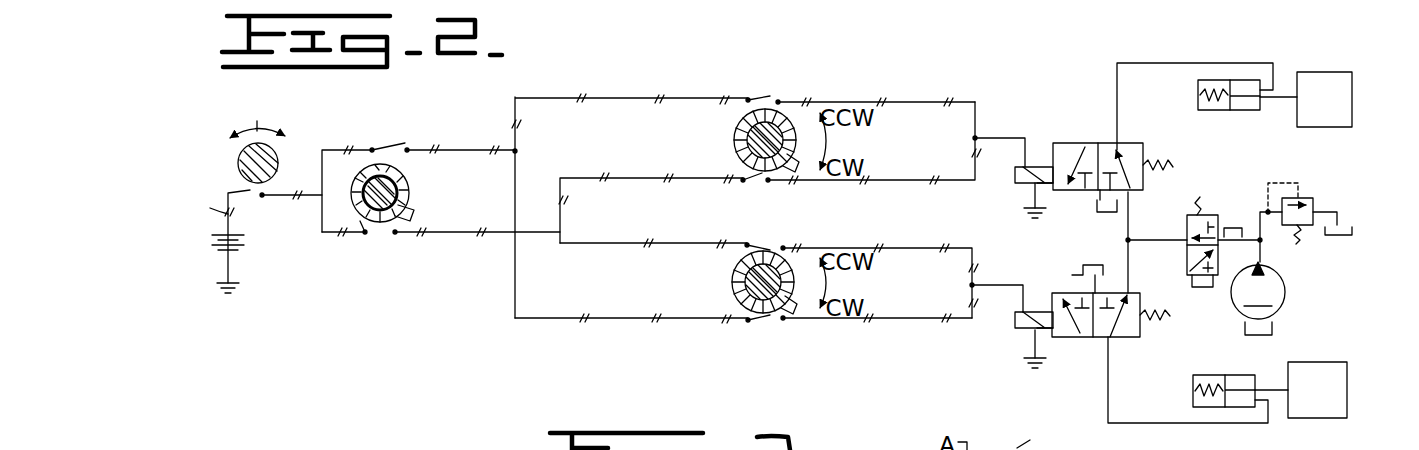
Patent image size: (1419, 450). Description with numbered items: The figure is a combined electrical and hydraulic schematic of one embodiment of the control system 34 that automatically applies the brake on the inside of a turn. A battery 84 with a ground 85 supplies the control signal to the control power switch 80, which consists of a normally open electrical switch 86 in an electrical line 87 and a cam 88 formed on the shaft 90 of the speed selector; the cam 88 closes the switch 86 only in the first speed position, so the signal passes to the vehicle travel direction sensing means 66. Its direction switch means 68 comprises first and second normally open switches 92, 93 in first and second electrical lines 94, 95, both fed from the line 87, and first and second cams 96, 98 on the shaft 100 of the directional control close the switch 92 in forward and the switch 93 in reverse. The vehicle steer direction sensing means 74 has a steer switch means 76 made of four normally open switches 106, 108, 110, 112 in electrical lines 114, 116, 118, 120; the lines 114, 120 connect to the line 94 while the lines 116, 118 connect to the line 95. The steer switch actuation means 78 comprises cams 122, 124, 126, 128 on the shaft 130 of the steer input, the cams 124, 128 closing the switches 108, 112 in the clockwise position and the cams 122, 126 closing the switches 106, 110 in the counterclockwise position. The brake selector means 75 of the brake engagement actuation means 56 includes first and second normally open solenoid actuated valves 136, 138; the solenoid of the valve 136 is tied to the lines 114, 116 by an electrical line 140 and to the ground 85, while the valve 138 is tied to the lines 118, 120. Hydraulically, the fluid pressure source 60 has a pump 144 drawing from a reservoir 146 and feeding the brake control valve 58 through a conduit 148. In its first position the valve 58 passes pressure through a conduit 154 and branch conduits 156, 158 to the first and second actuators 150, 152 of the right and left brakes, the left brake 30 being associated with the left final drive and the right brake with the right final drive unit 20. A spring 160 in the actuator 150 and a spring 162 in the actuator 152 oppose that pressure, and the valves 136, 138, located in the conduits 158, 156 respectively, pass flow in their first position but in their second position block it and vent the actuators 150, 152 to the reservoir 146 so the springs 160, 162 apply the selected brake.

The right final drive unit 20 is at (1312, 418).
The left brake 30 is at (1336, 72).
The control system 34 is at (460, 334).
The brake engagement actuation means 56 is at (1112, 50).
The brake control valve 58 is at (1187, 255).
The fluid pressure source 60 is at (1300, 283).
The vehicle travel direction sensing means 66 is at (422, 112).
The direction switch means 68 is at (343, 255).
The vehicle steer direction sensing means 74 is at (637, 66).
The brake selector means 75 is at (993, 193).
The steer switch means 76 is at (680, 205).
The steer switch actuation means 78 is at (682, 188).
The control power switch 80 is at (290, 100).
The battery 84 is at (240, 233).
The ground 85 is at (238, 284).
The normally open electrical switch 86 is at (247, 210).
The electrical line 87 is at (265, 196).
The cam 88 is at (245, 175).
The shaft 90 is at (280, 150).
The first normally open electrical switch 92 is at (393, 153).
The second normally open electrical switch 93 is at (380, 234).
The first electrical line 94 is at (337, 148).
The second electrical line 95 is at (463, 229).
The first cam 96 is at (465, 152).
The second cam 98 is at (413, 217).
The shaft 100 is at (356, 218).
The first normally open electrical switch 106 is at (745, 110).
The second normally open electrical switch 108 is at (745, 181).
The third normally open electrical switch 110 is at (758, 243).
The fourth normally open electrical switch 112 is at (760, 322).
The first electrical line 114 is at (642, 97).
The second electrical line 116 is at (628, 177).
The third electrical line 118 is at (673, 243).
The fourth electrical line 120 is at (612, 318).
The first cam 122 is at (798, 102).
The second cam 124 is at (798, 157).
The third cam 126 is at (797, 250).
The fourth cam 128 is at (798, 303).
The shaft 130 is at (735, 130).
The first solenoid actuated control valve 136 is at (1092, 143).
The second solenoid actuated control valve 138 is at (1090, 337).
The electrical line 140 is at (997, 138).
The pump 144 is at (995, 285).
The reservoir 146 is at (1058, 225).
The conduit 148 is at (1262, 252).
The first actuator 150 is at (1233, 375).
The second actuator 152 is at (1215, 109).
The conduit 154 is at (1130, 240).
The branch conduit 156 is at (1113, 362).
The branch conduit 158 is at (1133, 200).
The spring 160 is at (1193, 392).
The spring 162 is at (1200, 95).